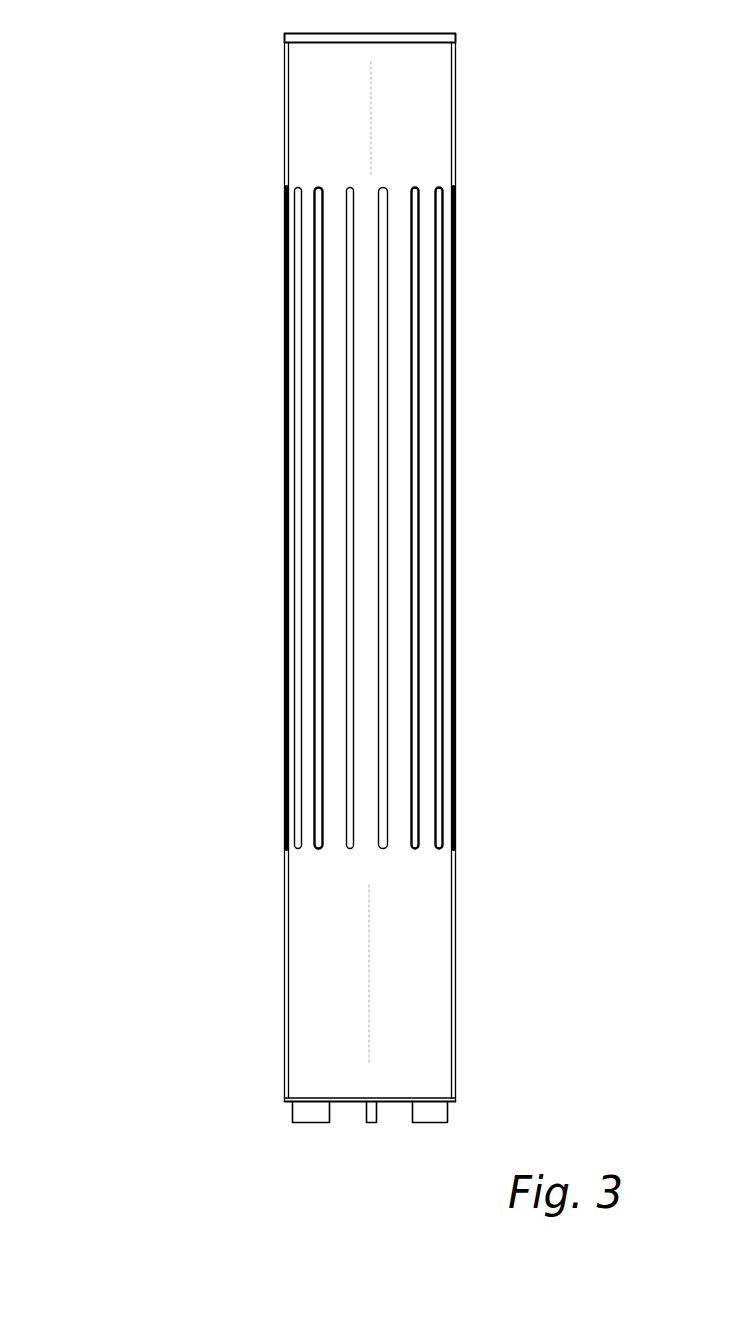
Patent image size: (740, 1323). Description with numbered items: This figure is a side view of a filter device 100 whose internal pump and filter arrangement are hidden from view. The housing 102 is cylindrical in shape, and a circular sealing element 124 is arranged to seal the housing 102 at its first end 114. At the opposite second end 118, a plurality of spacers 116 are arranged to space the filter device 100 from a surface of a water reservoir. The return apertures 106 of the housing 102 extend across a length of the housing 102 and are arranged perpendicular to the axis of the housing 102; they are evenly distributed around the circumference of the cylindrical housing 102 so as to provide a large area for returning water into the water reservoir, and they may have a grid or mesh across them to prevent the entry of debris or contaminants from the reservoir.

The filter device 100 is at (159, 81).
The housing 102 is at (285, 958).
The return apertures 106 is at (415, 350).
The first end 114 is at (510, 69).
The spacers 116 is at (307, 1112).
The second end 118 is at (494, 1034).
The sealing element 124 is at (287, 37).